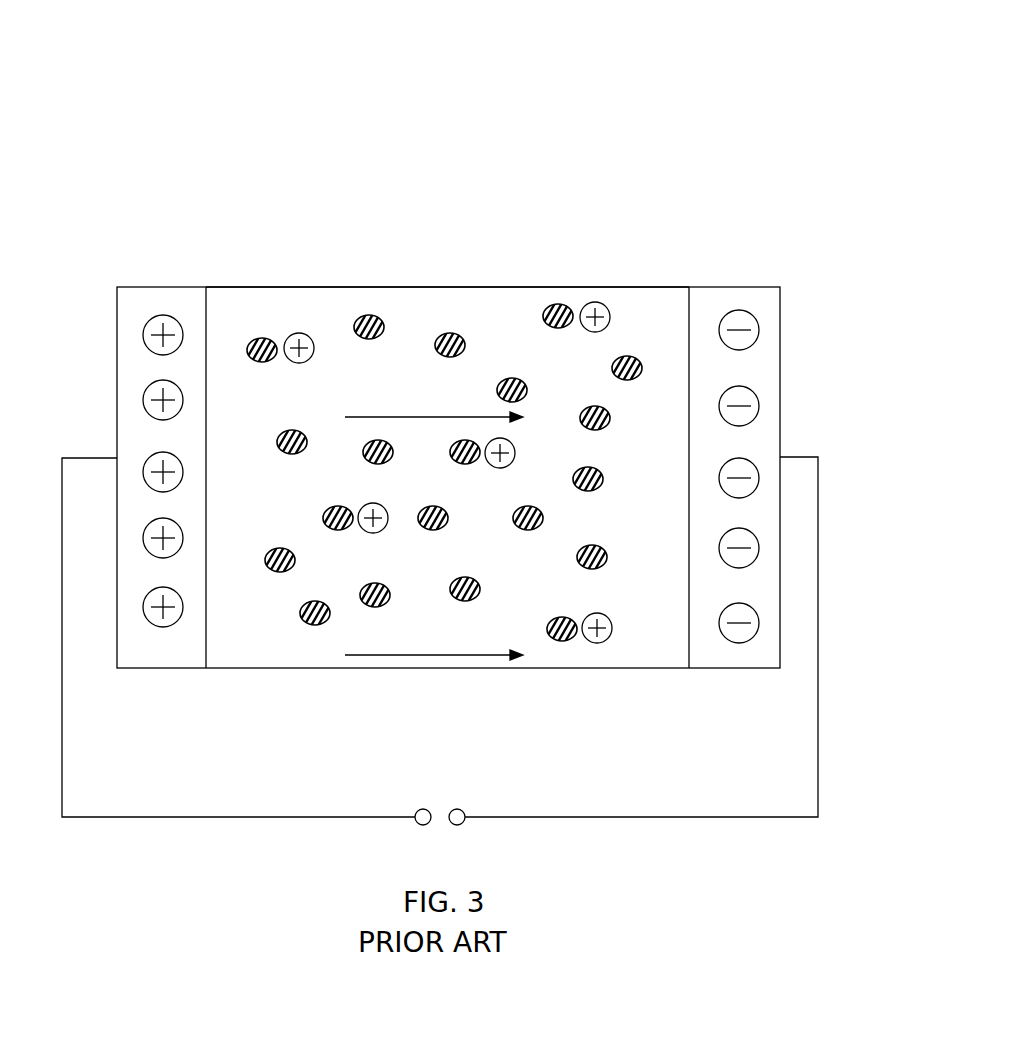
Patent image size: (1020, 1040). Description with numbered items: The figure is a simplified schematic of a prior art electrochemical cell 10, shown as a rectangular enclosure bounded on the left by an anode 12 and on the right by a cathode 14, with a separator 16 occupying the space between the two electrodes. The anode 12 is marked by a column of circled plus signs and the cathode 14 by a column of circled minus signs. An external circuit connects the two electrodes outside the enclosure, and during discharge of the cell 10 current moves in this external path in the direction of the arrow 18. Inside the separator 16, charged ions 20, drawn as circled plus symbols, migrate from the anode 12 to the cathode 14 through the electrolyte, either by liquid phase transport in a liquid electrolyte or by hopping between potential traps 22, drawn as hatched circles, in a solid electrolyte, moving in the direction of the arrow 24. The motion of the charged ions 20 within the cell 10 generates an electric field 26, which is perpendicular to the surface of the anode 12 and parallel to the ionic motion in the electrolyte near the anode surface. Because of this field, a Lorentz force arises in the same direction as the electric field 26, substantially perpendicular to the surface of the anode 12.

The electrochemical cell 10 is at (598, 70).
The anode 12 is at (150, 285).
The cathode 14 is at (738, 285).
The separator 16 is at (378, 285).
The arrow 18 is at (853, 480).
The charged ions 20 is at (233, 328).
The potential traps 22 is at (355, 320).
The arrow 24 is at (460, 652).
The electric field 26 is at (375, 417).